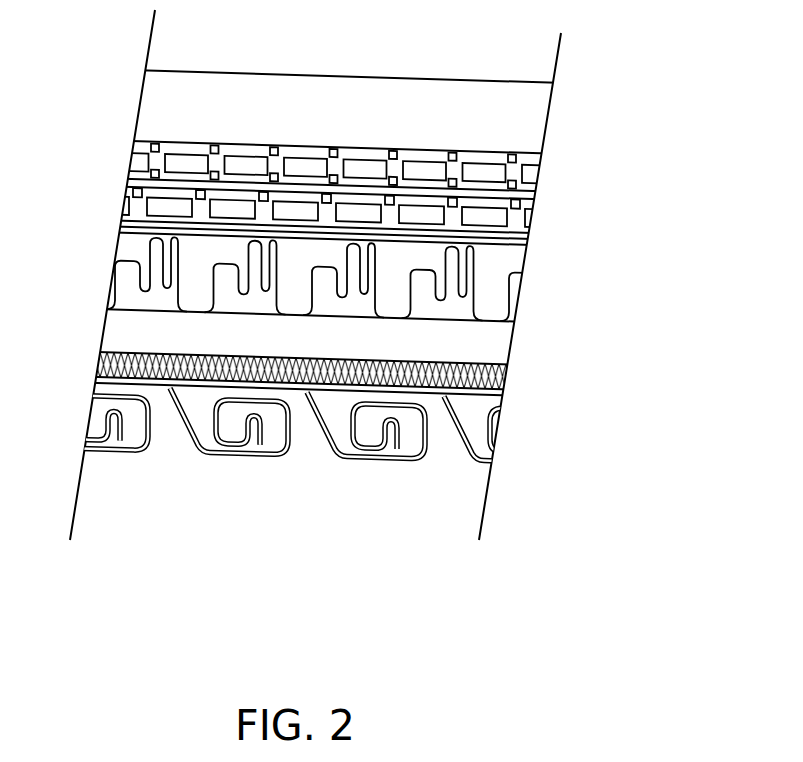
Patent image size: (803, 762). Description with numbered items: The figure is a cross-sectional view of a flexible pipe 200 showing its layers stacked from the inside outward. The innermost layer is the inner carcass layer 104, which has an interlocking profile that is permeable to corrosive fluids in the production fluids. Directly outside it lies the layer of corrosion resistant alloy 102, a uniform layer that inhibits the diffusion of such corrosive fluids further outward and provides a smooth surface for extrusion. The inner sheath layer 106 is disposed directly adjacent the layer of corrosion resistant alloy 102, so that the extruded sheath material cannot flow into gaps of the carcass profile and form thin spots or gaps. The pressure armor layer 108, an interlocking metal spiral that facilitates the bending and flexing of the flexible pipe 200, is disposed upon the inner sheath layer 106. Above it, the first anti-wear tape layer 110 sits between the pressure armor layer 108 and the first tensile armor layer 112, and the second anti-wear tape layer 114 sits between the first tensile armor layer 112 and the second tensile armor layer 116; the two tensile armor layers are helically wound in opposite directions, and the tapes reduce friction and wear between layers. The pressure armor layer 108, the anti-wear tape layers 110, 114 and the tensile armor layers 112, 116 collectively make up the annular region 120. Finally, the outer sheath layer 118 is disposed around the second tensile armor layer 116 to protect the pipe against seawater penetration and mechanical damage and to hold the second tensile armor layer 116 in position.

The flexible pipe 200 is at (313, 691).
The layer of corrosion resistant alloy 102 is at (507, 367).
The inner carcass layer 104 is at (79, 382).
The inner sheath layer 106 is at (90, 312).
The pressure armor layer 108 is at (519, 246).
The first anti-wear tape layer 110 is at (125, 229).
The first tensile armor layer 112 is at (140, 208).
The second anti-wear tape layer 114 is at (535, 199).
The second tensile armor layer 116 is at (150, 160).
The outer sheath layer 118 is at (132, 70).
The annular region 120 is at (615, 152).